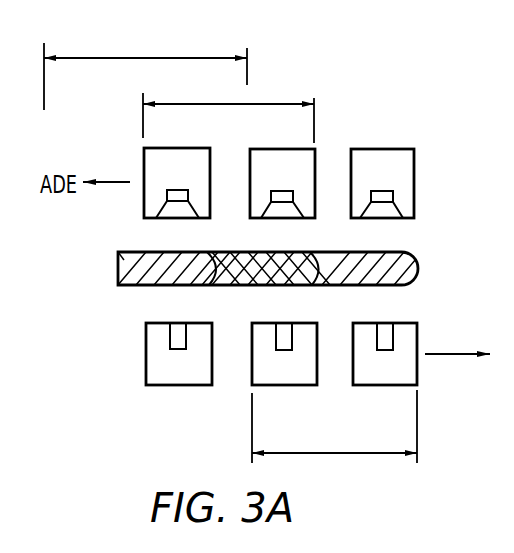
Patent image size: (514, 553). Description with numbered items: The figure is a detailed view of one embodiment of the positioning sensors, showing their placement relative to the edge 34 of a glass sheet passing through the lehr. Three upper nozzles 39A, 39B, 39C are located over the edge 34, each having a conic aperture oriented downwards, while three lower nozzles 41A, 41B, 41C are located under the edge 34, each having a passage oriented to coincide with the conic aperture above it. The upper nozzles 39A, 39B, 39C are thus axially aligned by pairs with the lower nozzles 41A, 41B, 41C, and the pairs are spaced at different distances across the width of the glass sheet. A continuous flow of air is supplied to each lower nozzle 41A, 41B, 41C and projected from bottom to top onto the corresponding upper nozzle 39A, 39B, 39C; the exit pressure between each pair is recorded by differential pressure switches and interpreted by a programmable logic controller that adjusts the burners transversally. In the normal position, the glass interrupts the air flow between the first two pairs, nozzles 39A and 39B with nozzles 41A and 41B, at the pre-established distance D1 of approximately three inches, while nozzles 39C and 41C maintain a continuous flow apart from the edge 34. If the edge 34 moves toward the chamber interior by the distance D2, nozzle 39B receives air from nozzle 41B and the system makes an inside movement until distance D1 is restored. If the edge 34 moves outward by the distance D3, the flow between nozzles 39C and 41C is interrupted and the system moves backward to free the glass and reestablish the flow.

The edge 34 is at (154, 286).
The nozzle 39A is at (144, 158).
The nozzle 39B is at (316, 163).
The nozzle 39C is at (414, 175).
The nozzle 41A is at (146, 368).
The nozzle 41B is at (252, 368).
The nozzle 41C is at (417, 337).
The pre-established distance D1 is at (228, 111).
The distance D2 is at (145, 68).
The distance D3 is at (334, 426).